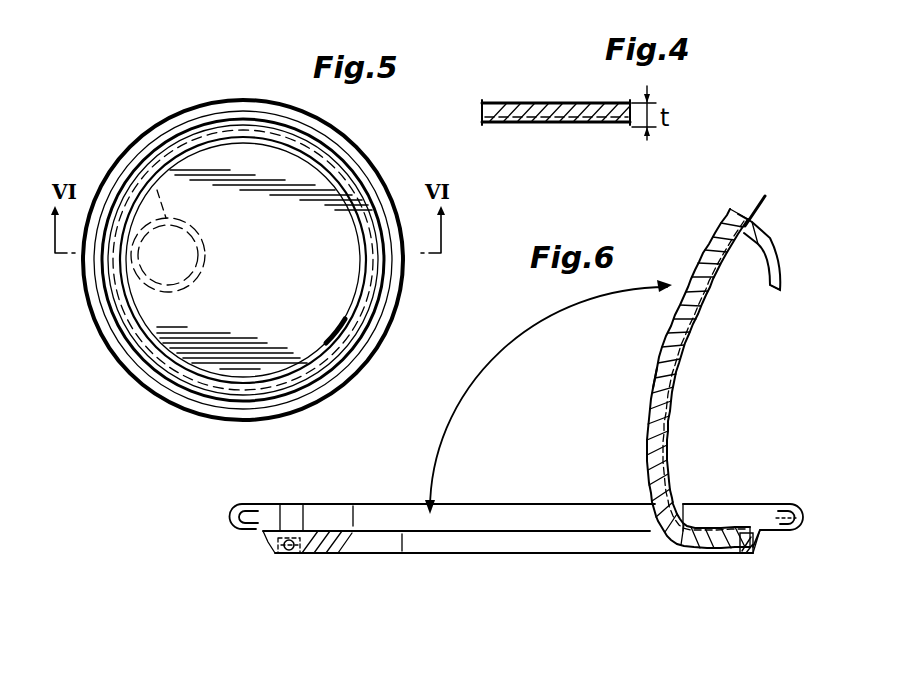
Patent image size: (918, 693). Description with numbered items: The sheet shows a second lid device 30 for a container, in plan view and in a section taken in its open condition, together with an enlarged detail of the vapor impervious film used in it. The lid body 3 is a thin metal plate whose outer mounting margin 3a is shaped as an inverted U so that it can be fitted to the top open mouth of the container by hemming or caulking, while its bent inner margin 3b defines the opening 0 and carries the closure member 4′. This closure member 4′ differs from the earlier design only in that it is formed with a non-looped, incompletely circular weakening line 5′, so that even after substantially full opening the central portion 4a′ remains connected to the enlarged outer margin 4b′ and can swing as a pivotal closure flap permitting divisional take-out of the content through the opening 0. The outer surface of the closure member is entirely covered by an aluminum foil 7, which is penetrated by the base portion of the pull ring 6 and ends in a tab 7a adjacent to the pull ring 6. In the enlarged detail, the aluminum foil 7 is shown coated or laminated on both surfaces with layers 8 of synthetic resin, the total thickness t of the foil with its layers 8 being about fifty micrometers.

In FIG. 6, the lid body 3 is at (783, 546).
In FIG. 5, the outer mounting margin 3a is at (103, 329).
In FIG. 6, the outer mounting margin 3a is at (790, 502).
In FIG. 6, the bent inner margin 3b is at (282, 553).
In FIG. 6, the closure member 4′ is at (676, 428).
In FIG. 6, the central portion 4a′ is at (657, 372).
In FIG. 6, the enlarged outer margin 4b′ is at (738, 557).
In FIG. 5, the weakening line 5′ is at (180, 357).
In FIG. 5, the pull ring 6 is at (140, 163).
In FIG. 6, the pull ring 6 is at (778, 266).
In FIG. 4, the aluminum foil 7 is at (545, 103).
In FIG. 6, the aluminum foil 7 is at (676, 387).
In FIG. 6, the tab end of lid sheet 7a is at (763, 206).
In FIG. 4, the layers of synthetic resin 8 is at (560, 123).
In FIG. 5, the lid device 30 is at (378, 162).
In FIG. 6, the lid device 30 is at (562, 497).
In FIG. 5, the opening 0 is at (127, 373).
In FIG. 6, the opening 0 is at (327, 553).